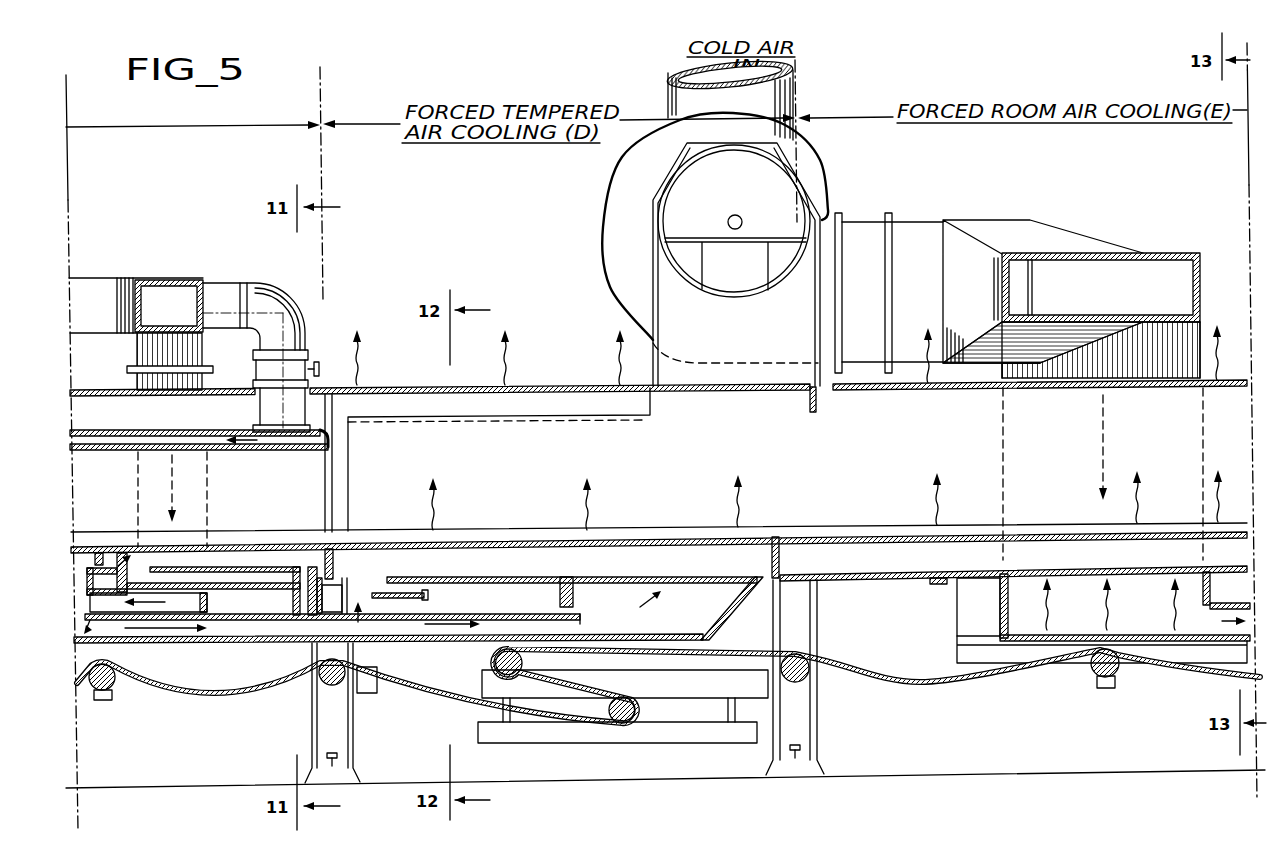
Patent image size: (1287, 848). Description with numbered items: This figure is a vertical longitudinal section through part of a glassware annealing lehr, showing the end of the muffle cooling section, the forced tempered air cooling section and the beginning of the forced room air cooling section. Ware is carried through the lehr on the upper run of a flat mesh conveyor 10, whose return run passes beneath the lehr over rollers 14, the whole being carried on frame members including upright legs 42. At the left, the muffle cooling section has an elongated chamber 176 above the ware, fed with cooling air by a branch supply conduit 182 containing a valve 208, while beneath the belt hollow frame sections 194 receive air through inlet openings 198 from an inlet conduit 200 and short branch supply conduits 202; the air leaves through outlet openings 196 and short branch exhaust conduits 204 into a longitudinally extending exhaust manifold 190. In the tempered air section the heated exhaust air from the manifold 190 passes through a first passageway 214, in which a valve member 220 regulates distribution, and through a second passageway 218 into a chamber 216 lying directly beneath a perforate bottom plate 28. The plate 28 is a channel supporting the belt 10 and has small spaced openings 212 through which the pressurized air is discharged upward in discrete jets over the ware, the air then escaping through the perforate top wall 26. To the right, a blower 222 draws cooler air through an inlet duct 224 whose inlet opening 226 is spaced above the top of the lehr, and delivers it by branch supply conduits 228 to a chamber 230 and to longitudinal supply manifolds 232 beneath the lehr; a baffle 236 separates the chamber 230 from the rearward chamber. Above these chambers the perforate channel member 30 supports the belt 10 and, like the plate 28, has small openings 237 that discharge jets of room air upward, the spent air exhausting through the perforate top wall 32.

The conveyor 10 is at (470, 541).
The rollers 14 is at (113, 684).
The perforate top wall 26 is at (533, 395).
The perforate bottom wall or plate 28 is at (530, 547).
The perforate channel member 30 is at (1123, 538).
The perforate top wall 32 is at (992, 388).
The upright legs 42 is at (325, 742).
The elongated chamber 176 is at (101, 433).
The branch supply conduit 182 is at (280, 295).
The exhaust manifold 190 is at (500, 620).
The hollow belt frame section 194 is at (262, 557).
The outlet opening 196 is at (308, 566).
The inlet opening 198 is at (122, 565).
The inlet conduit 200 is at (182, 298).
The short branch supply conduit 202 is at (140, 585).
The short branch exhaust conduit 204 is at (93, 605).
The valve 208 is at (300, 350).
The openings 212 is at (397, 537).
The first passageway 214 is at (362, 583).
The chamber 216 is at (632, 575).
The second passageway 218 is at (697, 612).
The valve member 220 is at (410, 599).
The blower 222 is at (812, 172).
The inlet duct 224 is at (677, 87).
The inlet opening 226 is at (772, 73).
The branch supply conduit 228 is at (1053, 238).
The chamber 230 is at (1052, 566).
The supply manifold 232 is at (1228, 625).
The baffle 236 is at (777, 560).
The openings 237 is at (960, 546).